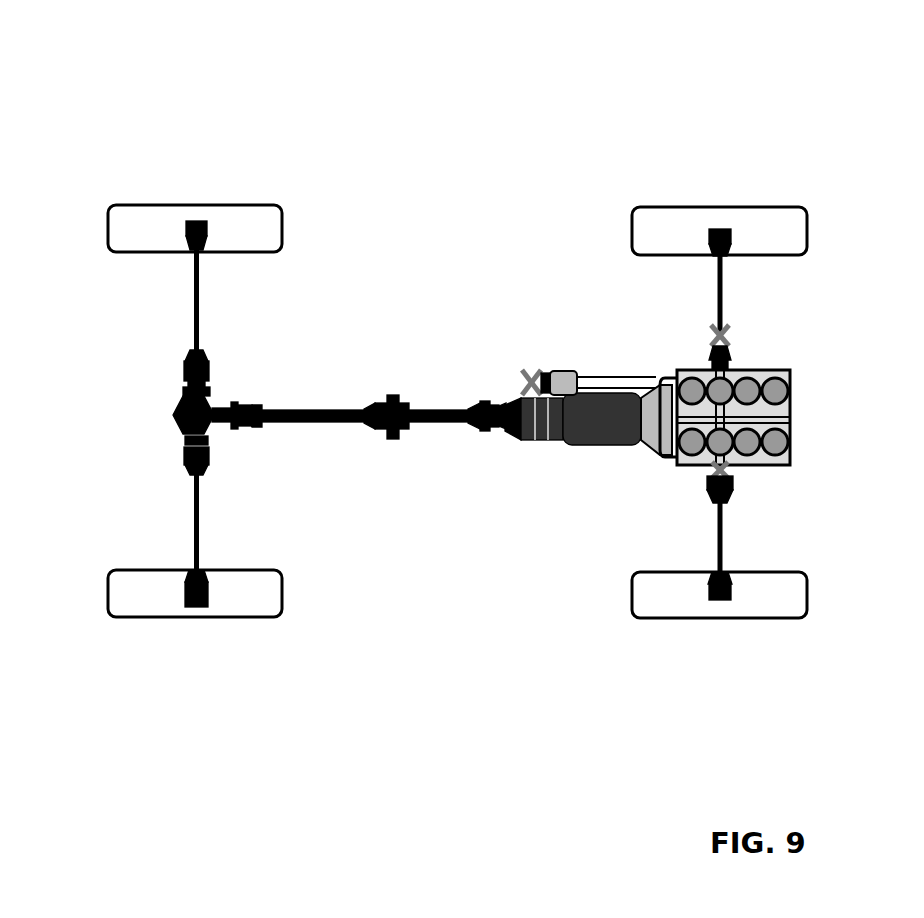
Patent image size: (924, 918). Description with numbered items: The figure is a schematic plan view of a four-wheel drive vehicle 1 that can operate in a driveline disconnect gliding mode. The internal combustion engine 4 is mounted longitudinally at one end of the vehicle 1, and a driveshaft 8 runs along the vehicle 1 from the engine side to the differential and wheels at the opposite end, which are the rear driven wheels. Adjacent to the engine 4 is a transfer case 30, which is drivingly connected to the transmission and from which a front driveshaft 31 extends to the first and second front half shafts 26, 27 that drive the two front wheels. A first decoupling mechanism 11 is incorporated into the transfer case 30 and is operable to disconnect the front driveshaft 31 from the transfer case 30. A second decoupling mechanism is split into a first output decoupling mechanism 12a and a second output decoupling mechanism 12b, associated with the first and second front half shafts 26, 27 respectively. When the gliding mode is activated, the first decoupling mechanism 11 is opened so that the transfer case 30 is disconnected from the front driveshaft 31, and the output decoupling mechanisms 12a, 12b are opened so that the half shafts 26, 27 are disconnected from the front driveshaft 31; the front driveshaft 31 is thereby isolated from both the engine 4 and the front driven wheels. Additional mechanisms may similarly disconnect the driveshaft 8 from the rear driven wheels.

The vehicle 1 is at (148, 137).
The internal combustion engine 4 is at (547, 459).
The driveshaft 8 is at (335, 412).
The first decoupling mechanism 11 is at (536, 376).
The first output decoupling mechanism 12a is at (730, 478).
The second output decoupling mechanism 12b is at (727, 335).
The first front half shaft 26 is at (723, 537).
The second front half shaft 27 is at (723, 300).
The transfer case 30 is at (520, 378).
The front driveshaft 31 is at (633, 383).